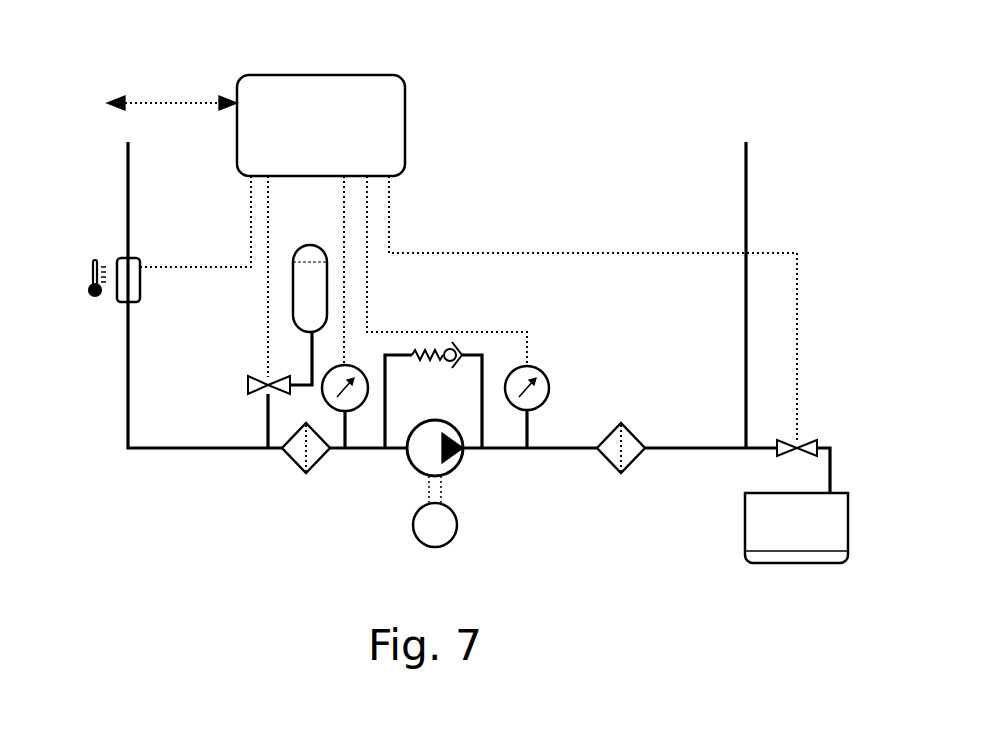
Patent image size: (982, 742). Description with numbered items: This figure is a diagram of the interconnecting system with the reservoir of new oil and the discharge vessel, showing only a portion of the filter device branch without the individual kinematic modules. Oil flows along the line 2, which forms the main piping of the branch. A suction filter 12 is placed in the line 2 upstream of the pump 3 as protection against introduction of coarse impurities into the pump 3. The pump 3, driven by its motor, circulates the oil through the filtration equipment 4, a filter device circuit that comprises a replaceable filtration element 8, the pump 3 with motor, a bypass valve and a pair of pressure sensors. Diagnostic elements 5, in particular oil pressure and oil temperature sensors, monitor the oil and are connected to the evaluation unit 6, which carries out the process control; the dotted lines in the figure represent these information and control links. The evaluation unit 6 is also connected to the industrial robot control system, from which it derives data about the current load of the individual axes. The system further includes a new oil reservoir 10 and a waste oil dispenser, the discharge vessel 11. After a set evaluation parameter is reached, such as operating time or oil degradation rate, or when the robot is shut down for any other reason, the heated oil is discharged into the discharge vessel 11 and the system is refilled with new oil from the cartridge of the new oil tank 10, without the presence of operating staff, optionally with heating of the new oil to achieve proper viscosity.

The line 2 is at (127, 420).
The pump 3 is at (455, 473).
The filtration equipment 4 is at (636, 450).
The diagnostic element 5 is at (140, 260).
The evaluation unit 6 is at (441, 246).
The filtration element 8 is at (623, 447).
The new oil tank 10 is at (293, 280).
The discharge vessel 11 is at (757, 540).
The suction filter 12 is at (302, 475).